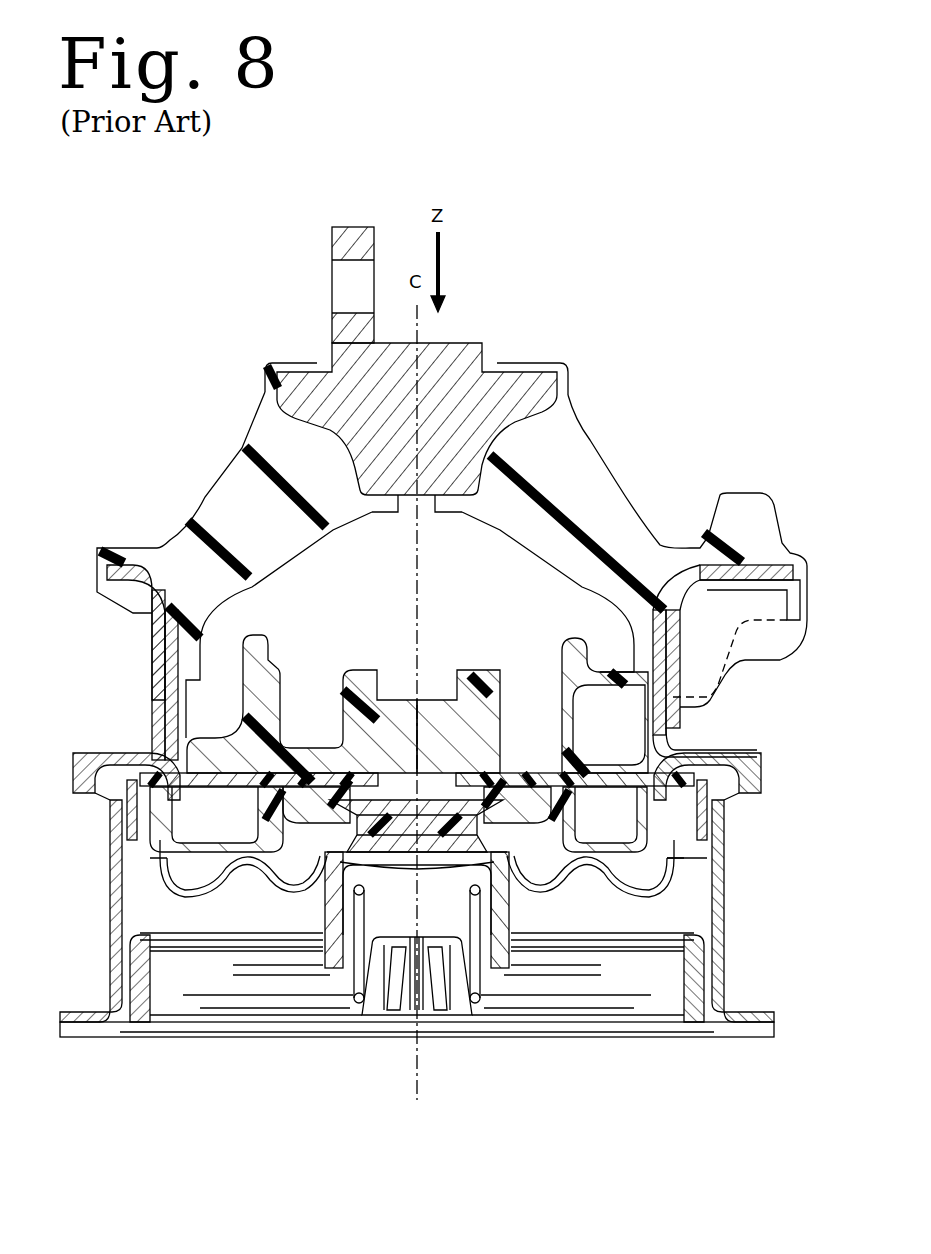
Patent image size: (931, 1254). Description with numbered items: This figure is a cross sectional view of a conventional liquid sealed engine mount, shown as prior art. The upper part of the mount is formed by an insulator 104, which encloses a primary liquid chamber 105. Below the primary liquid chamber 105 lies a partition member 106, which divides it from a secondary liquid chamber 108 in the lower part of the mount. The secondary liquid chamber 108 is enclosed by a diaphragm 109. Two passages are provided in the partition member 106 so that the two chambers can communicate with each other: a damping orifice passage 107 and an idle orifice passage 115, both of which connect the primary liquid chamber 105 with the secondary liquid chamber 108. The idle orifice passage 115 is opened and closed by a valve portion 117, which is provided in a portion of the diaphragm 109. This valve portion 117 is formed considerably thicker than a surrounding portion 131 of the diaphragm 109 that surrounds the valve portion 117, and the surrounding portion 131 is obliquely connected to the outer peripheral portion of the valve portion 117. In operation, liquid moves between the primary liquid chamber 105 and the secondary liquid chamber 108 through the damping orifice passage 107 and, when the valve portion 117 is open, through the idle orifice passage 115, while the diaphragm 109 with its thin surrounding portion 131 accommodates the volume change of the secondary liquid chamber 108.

The insulator 104 is at (205, 497).
The primary liquid chamber 105 is at (379, 586).
The partition member 106 is at (203, 706).
The damping orifice passage 107 is at (200, 801).
The secondary liquid chamber 108 is at (640, 878).
The diaphragm 109 is at (148, 888).
The idle orifice passage 115 is at (443, 785).
The valve portion 117 is at (428, 798).
The surrounding portion 131 is at (270, 897).